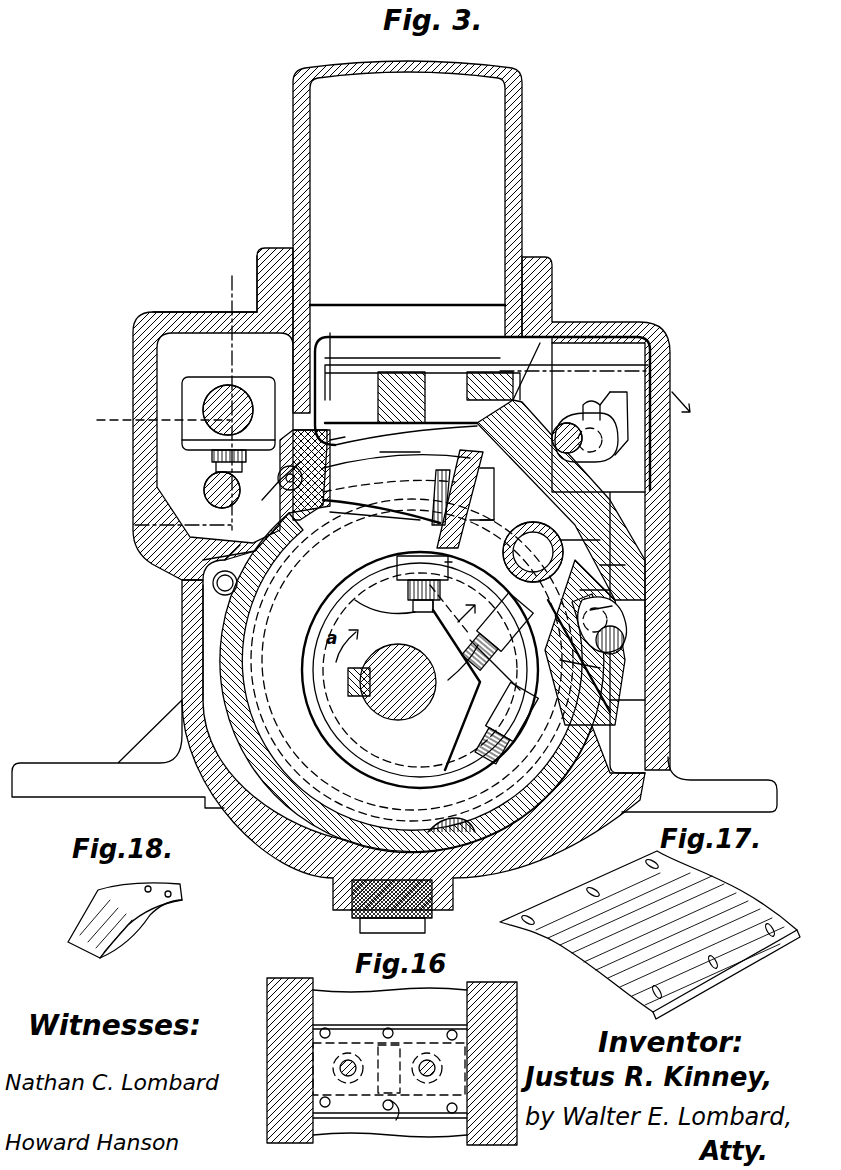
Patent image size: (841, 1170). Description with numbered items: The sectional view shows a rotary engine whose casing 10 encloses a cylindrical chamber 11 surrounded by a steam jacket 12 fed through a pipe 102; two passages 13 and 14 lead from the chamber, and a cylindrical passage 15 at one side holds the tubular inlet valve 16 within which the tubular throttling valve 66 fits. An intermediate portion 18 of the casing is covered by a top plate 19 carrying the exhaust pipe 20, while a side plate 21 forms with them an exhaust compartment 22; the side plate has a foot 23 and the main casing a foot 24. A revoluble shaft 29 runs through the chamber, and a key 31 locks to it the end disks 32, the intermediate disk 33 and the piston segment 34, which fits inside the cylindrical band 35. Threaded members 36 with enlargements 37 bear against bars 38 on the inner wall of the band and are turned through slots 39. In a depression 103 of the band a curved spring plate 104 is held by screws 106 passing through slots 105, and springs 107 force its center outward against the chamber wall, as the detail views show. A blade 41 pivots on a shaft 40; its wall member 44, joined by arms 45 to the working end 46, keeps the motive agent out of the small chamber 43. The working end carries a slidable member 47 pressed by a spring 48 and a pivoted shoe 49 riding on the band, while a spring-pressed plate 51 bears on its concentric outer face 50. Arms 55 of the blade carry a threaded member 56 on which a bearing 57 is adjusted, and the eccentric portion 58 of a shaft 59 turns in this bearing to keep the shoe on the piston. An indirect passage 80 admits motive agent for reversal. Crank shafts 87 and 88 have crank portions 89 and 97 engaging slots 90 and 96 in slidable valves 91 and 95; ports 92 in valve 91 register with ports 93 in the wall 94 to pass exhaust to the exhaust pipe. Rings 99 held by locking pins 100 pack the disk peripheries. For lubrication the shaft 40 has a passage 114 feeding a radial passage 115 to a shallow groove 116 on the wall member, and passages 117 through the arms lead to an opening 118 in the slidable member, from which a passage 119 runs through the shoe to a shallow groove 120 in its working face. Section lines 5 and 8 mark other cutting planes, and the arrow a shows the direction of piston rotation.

In FIG. 3, the section line 5 is at (581, 505).
In FIG. 3, the section line 8 is at (174, 394).
In FIG. 3, the casing 10 is at (192, 665).
In FIG. 3, the cylindrical chamber 11 is at (300, 800).
In FIG. 3, the steam jacket 12 is at (205, 686).
In FIG. 3, the passage 13 is at (238, 393).
In FIG. 3, the passage 14 is at (598, 667).
In FIG. 3, the cylindrical passage 15 is at (625, 566).
In FIG. 3, the tubular inlet valve 16 is at (565, 552).
In FIG. 3, the intermediate portion of casing 18 is at (133, 395).
In FIG. 3, the top plate 19 is at (240, 303).
In FIG. 3, the exhaust pipe 20 is at (524, 168).
In FIG. 3, the side plate 21 is at (657, 623).
In FIG. 3, the compartment 22 is at (648, 456).
In FIG. 3, the foot 23 is at (727, 790).
In FIG. 3, the foot 24 is at (66, 772).
In FIG. 3, the revoluble shaft 29 is at (420, 670).
In FIG. 3, the key 31 is at (350, 682).
In FIG. 3, the cylindrical disks 32 is at (472, 704).
In FIG. 16, the cylindrical disks 32 is at (490, 982).
In FIG. 16, the intermediate disk 33 is at (292, 982).
In FIG. 3, the segment 34 is at (412, 660).
In FIG. 3, the cylindrical band 35 is at (336, 762).
In FIG. 16, the cylindrical band 35 is at (330, 998).
In FIG. 3, the threaded members 36 is at (416, 643).
In FIG. 3, the enlargements 37 is at (453, 598).
In FIG. 3, the bars 38 is at (470, 745).
In FIG. 3, the slots 39 is at (381, 515).
In FIG. 3, the shaft 40 is at (240, 540).
In FIG. 3, the blade 41 is at (260, 548).
In FIG. 3, the small chamber 43 is at (175, 342).
In FIG. 3, the wall member 44 is at (396, 472).
In FIG. 3, the arms 45 is at (350, 462).
In FIG. 3, the working end 46 is at (462, 462).
In FIG. 3, the slidable member 47 is at (452, 506).
In FIG. 3, the spring 48 is at (447, 492).
In FIG. 3, the shoe 49 is at (432, 538).
In FIG. 3, the outer face 50 is at (496, 489).
In FIG. 3, the spring-pressed plate 51 is at (482, 503).
In FIG. 3, the arms 55 is at (204, 490).
In FIG. 3, the threaded member 56 is at (216, 468).
In FIG. 3, the bearing 57 is at (190, 380).
In FIG. 3, the eccentric portion 58 is at (212, 446).
In FIG. 3, the shaft 59 is at (148, 420).
In FIG. 3, the tubular throttling valve 66 is at (600, 540).
In FIG. 3, the indirect passage 80 is at (562, 526).
In FIG. 3, the crank shaft 87 is at (572, 432).
In FIG. 3, the crank shaft 88 is at (625, 641).
In FIG. 3, the crank portion 89 is at (604, 438).
In FIG. 3, the slot 90 is at (594, 428).
In FIG. 3, the slidable valve 91 is at (506, 398).
In FIG. 3, the ports 92 is at (442, 388).
In FIG. 3, the ports 93 is at (428, 398).
In FIG. 3, the wall 94 is at (392, 430).
In FIG. 3, the slidable valve 95 is at (622, 705).
In FIG. 3, the slot 96 is at (600, 590).
In FIG. 3, the crank portion 97 is at (612, 608).
In FIG. 3, the rings 99 is at (450, 848).
In FIG. 3, the locking pins 100 is at (512, 858).
In FIG. 3, the pipe 102 is at (220, 586).
In FIG. 3, the depression 103 is at (542, 645).
In FIG. 16, the depression 103 is at (404, 1024).
In FIG. 17, the curved spring plate 104 is at (740, 892).
In FIG. 16, the curved spring plate 104 is at (325, 1068).
In FIG. 17, the slots 105 is at (615, 858).
In FIG. 16, the slots 105 is at (392, 1110).
In FIG. 16, the screws 106 is at (322, 1030).
In FIG. 18, the springs 107 is at (98, 892).
In FIG. 16, the springs 107 is at (290, 1050).
In FIG. 3, the passage 114 is at (278, 478).
In FIG. 3, the radial passage 115 is at (250, 452).
In FIG. 3, the shallow groove 116 is at (310, 346).
In FIG. 3, the passage 117 is at (399, 471).
In FIG. 3, the opening 118 is at (547, 490).
In FIG. 3, the passage 119 is at (467, 603).
In FIG. 3, the shallow groove 120 is at (466, 568).